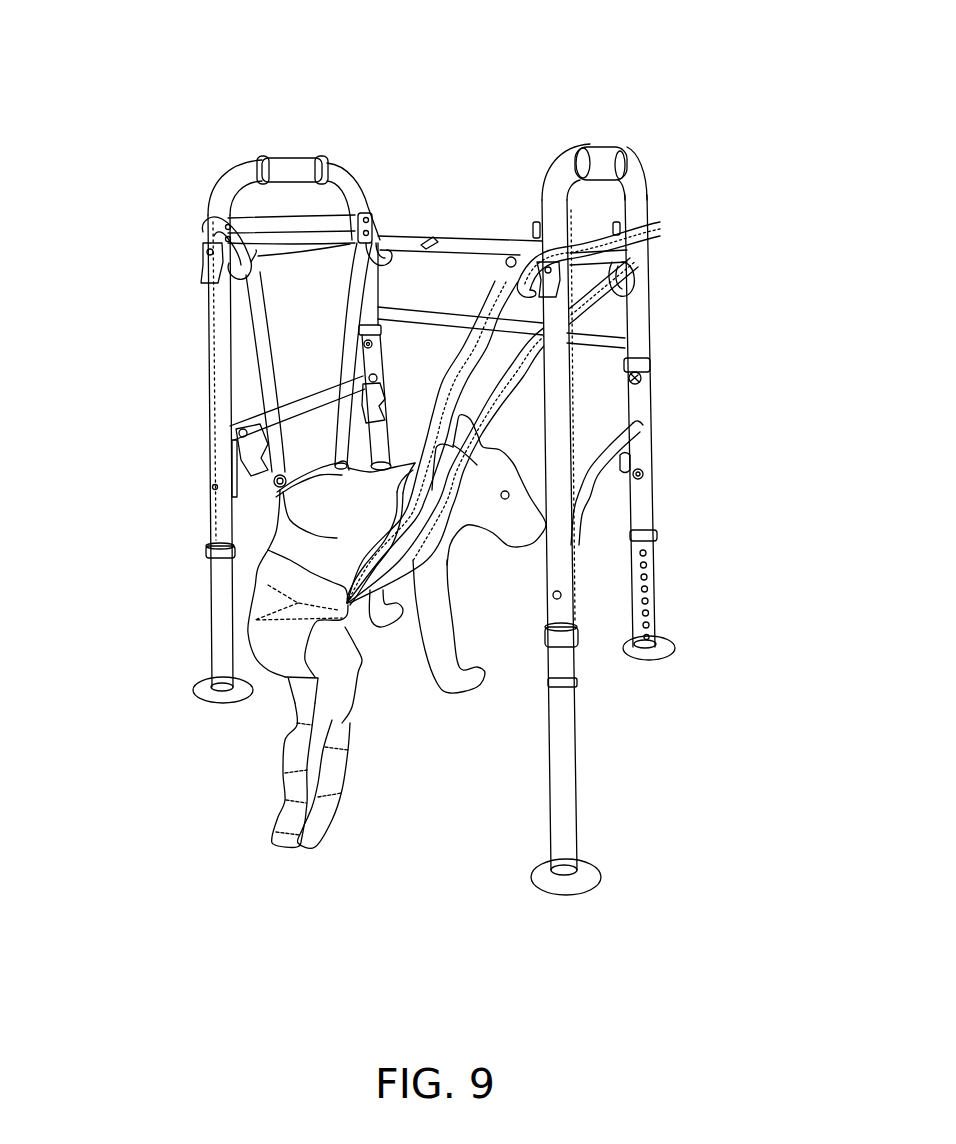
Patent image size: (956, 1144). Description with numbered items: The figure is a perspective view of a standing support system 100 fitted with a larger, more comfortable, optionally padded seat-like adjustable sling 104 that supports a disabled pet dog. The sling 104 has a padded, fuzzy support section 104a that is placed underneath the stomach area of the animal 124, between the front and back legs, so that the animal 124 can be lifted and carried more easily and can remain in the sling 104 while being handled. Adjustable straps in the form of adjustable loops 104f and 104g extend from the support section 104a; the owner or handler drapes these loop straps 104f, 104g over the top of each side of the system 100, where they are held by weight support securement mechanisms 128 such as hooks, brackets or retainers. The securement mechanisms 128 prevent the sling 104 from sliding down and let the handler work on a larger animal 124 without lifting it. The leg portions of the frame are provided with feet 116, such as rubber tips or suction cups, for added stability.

The standing support apparatus or system 100 is at (481, 118).
The sling 104 is at (399, 648).
The support section 104a is at (412, 558).
The adjustable loop strap 104f is at (262, 326).
The adjustable loop strap 104g is at (483, 343).
The foot 116 is at (213, 693).
The animal 124 is at (337, 538).
The weight support securement mechanism 128 is at (200, 300).